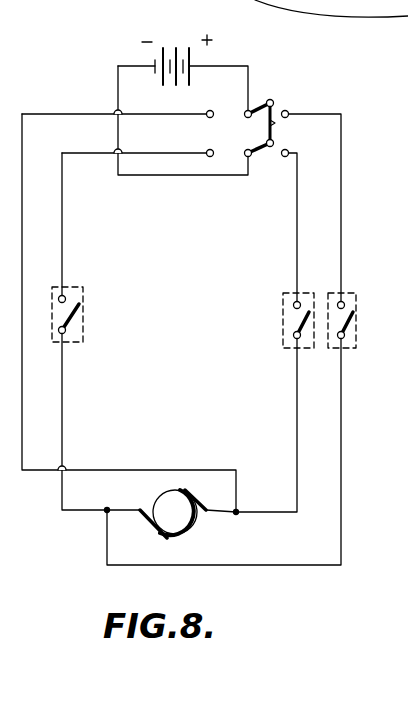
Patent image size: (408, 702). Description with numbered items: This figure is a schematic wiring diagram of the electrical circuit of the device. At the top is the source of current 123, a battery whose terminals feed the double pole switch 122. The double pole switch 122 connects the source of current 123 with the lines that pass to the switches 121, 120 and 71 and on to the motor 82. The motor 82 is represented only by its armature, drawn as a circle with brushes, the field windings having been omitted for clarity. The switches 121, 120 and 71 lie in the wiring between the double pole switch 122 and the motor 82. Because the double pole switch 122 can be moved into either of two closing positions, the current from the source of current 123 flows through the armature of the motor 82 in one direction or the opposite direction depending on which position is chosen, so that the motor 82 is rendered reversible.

The source of current 123 is at (150, 63).
The double pole switch 122 is at (257, 152).
The switch 121 is at (80, 311).
The switch 120 is at (292, 318).
The switch 71 is at (354, 320).
The motor 82 is at (167, 498).